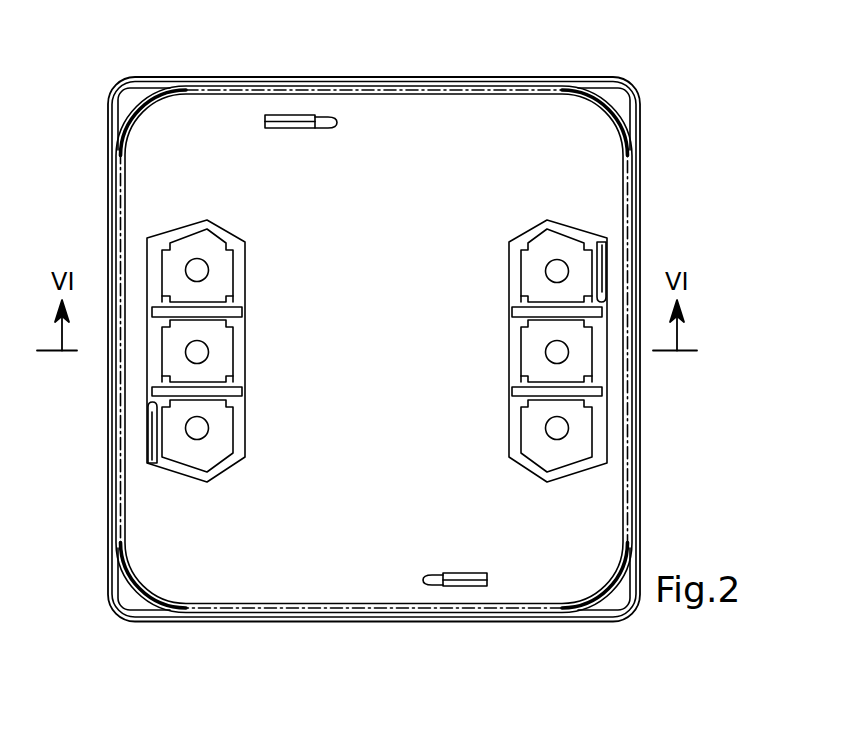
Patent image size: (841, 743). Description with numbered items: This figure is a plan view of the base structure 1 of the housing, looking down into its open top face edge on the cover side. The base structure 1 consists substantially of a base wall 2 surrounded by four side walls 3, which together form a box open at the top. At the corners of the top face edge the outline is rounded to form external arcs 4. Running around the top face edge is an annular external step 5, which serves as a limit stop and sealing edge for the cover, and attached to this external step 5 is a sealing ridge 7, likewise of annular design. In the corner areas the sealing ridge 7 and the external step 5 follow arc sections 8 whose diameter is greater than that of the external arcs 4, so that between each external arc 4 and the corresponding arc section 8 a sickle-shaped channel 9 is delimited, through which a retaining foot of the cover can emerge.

The base structure 1 is at (645, 190).
The base wall 2 is at (500, 140).
The side walls 3 is at (395, 77).
The external arcs 4 is at (628, 82).
The external step 5 is at (636, 499).
The sealing ridge 7 is at (120, 527).
The arc sections 8 is at (596, 116).
The sickle-shaped channel 9 is at (620, 112).